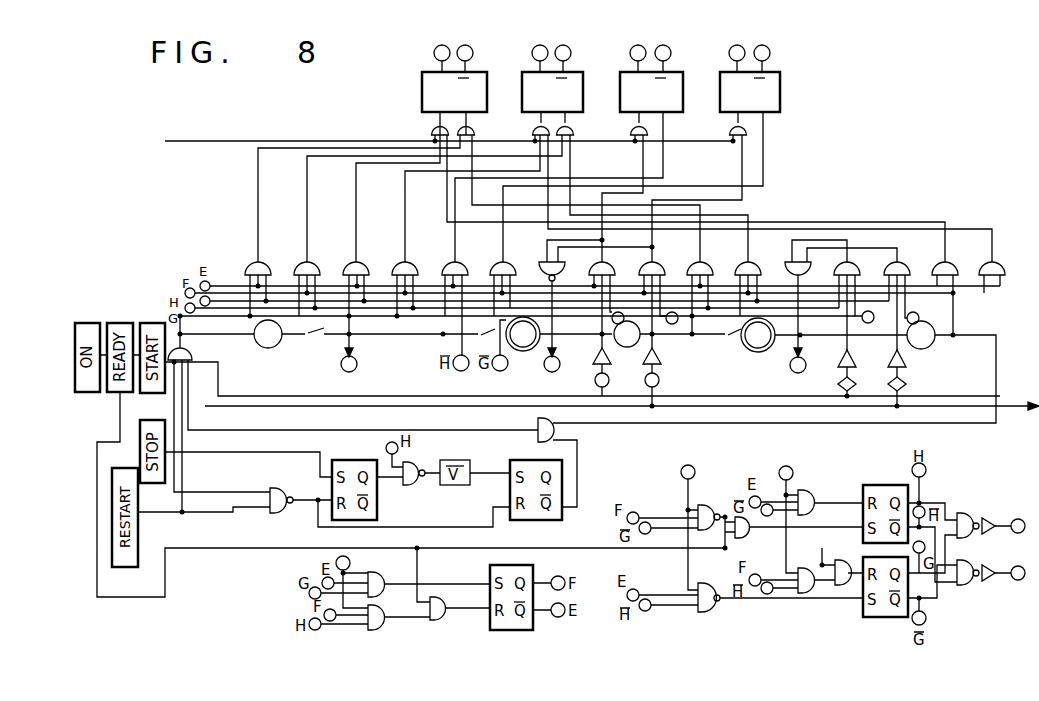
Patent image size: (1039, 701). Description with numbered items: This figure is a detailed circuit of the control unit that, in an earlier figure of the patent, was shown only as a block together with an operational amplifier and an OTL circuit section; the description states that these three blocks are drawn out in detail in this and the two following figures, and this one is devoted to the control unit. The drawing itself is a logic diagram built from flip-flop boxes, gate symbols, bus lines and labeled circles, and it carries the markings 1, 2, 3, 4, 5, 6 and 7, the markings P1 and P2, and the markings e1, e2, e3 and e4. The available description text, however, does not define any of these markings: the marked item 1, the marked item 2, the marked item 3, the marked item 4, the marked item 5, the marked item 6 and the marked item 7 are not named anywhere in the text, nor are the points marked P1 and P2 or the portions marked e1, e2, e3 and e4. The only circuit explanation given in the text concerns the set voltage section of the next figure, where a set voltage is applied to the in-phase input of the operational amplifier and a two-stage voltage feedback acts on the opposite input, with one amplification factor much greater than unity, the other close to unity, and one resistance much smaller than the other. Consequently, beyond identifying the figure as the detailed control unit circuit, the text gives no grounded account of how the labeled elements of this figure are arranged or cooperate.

The output indicator 1 is at (569, 424).
The output indicator 2 is at (618, 426).
The output indicator 3 is at (577, 441).
The flip-flop 4 is at (454, 82).
The flip-flop 5 is at (552, 85).
The flip-flop 6 is at (651, 85).
The flip-flop 7 is at (750, 85).
The pulse output P1 is at (591, 335).
The pulse output P2 is at (661, 342).
The input signal e1 is at (648, 184).
The input signal e2 is at (722, 181).
The input signal e3 is at (702, 193).
The input signal e4 is at (608, 181).